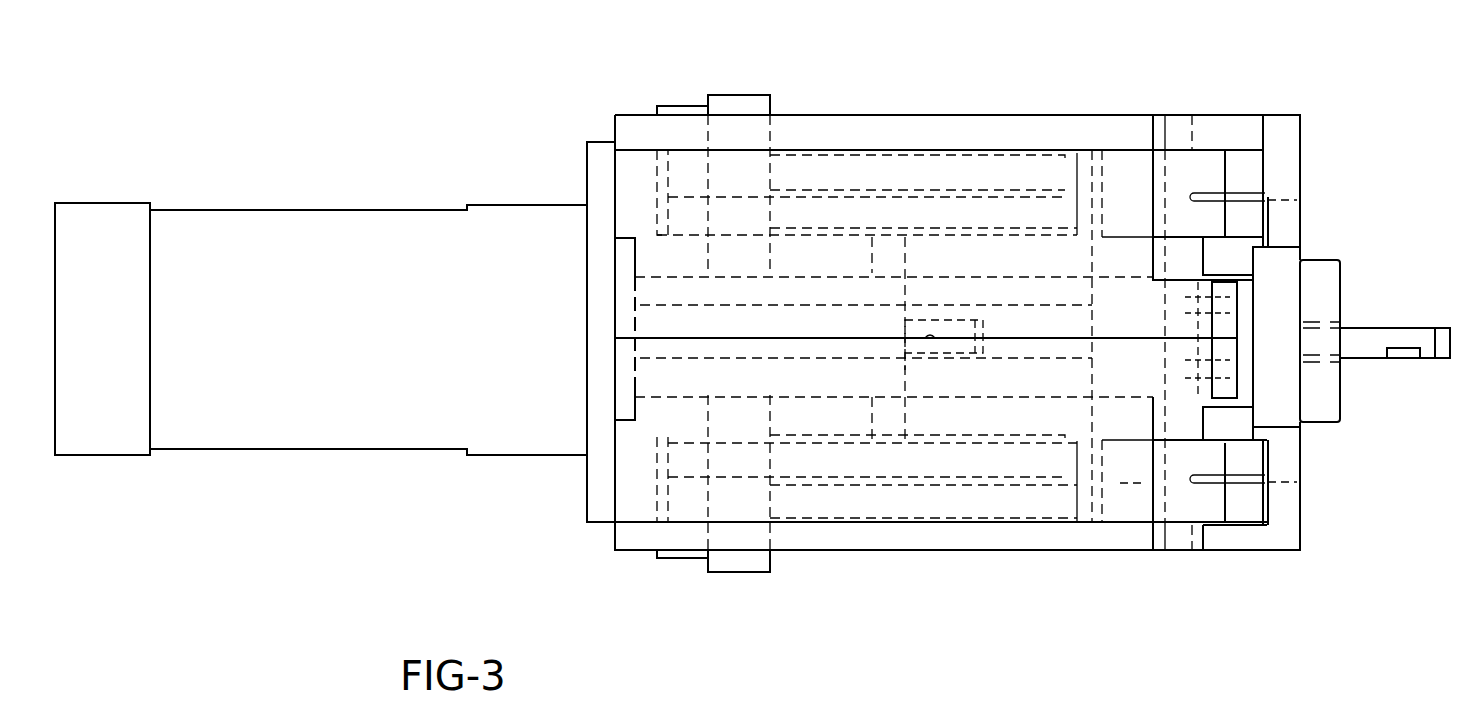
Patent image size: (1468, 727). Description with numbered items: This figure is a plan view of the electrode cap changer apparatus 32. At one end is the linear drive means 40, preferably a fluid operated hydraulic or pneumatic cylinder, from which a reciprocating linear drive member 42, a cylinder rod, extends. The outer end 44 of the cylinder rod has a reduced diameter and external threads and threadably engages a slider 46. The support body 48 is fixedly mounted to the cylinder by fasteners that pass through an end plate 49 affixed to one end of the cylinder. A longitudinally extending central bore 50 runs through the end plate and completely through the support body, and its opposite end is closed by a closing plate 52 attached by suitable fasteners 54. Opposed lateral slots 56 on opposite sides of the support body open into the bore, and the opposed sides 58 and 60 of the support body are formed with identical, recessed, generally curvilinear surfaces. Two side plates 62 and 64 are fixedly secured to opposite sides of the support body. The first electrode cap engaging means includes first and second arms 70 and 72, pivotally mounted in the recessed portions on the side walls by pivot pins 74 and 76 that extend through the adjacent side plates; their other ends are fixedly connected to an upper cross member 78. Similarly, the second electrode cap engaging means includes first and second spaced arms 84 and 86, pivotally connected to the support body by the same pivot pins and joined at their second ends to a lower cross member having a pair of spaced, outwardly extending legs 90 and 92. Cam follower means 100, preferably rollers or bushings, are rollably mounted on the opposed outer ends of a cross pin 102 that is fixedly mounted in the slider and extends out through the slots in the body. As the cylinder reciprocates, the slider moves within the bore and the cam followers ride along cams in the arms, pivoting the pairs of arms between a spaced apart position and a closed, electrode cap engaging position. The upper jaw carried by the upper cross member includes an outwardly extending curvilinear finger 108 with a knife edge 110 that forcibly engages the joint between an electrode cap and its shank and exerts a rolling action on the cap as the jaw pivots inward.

The electrode cap changer apparatus 32 is at (815, 30).
The linear drive means 40 is at (293, 210).
The linear drive member 42 is at (630, 148).
The outer end 44 is at (953, 320).
The slider 46 is at (1017, 288).
The support body 48 is at (677, 163).
The end plate 49 is at (592, 162).
The central bore 50 is at (822, 280).
The closing plate 52 is at (1253, 282).
The fasteners 54 is at (1195, 300).
The lateral slots 56 is at (908, 418).
The opposed side 58 is at (1082, 432).
The opposed side 60 is at (1080, 233).
The side plate 62 is at (1037, 545).
The side plate 64 is at (1128, 130).
The first arm 70 is at (1245, 515).
The second arm 72 is at (1237, 163).
The pivot pin 74 is at (772, 562).
The pivot pin 76 is at (742, 95).
The upper cross member 78 is at (1290, 535).
The first arm 84 is at (1258, 470).
The second arm 86 is at (1252, 218).
The leg 90 is at (1250, 427).
The leg 92 is at (1240, 250).
The cam follower means 100 is at (1127, 250).
The cross pin 102 is at (1142, 357).
The finger 108 is at (1427, 362).
The knife edge 110 is at (1410, 348).